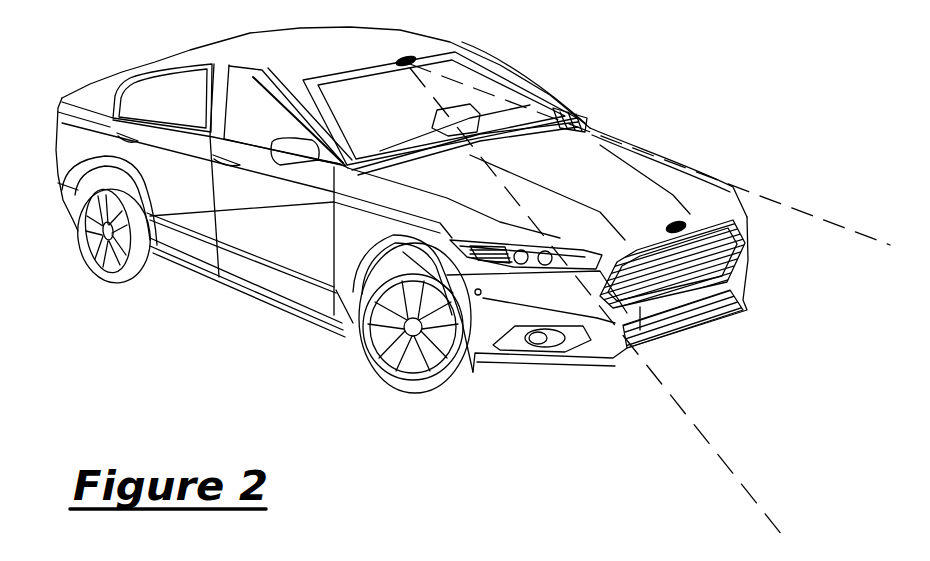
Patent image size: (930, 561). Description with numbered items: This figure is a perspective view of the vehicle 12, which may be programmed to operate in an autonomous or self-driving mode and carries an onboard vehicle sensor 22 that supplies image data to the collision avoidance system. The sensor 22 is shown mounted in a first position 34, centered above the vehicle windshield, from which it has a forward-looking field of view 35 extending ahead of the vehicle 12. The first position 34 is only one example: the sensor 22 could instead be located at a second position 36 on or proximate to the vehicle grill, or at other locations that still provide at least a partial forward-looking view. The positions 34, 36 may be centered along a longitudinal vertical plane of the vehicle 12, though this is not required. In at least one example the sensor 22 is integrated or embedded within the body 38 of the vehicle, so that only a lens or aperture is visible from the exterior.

The vehicle 12 is at (654, 88).
The onboard vehicle sensor 22 is at (405, 57).
The first position 34 is at (394, 68).
The forward-looking field of view 35 is at (845, 222).
The second position 36 is at (663, 235).
The body 38 is at (203, 54).